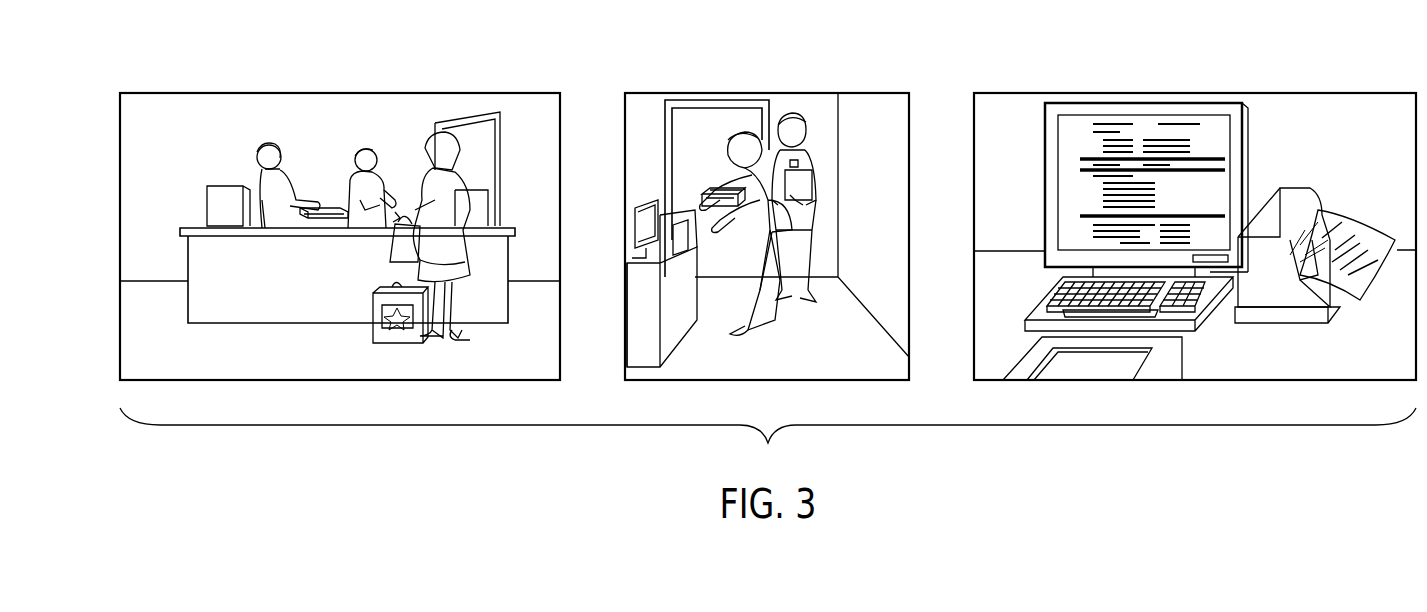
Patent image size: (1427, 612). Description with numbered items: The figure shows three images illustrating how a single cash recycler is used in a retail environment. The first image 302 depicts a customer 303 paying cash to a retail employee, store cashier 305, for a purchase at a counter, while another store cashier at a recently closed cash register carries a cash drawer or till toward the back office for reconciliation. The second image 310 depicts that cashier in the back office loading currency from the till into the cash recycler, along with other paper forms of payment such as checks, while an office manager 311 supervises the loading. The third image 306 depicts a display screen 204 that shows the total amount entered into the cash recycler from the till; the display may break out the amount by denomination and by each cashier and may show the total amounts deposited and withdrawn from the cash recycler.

The image 302 is at (157, 114).
The customer 303 is at (455, 262).
The store cashier 305 is at (364, 146).
The image 310 is at (863, 112).
The office manager 311 is at (808, 210).
The computer display 204 is at (1082, 132).
The image 306 is at (1342, 108).